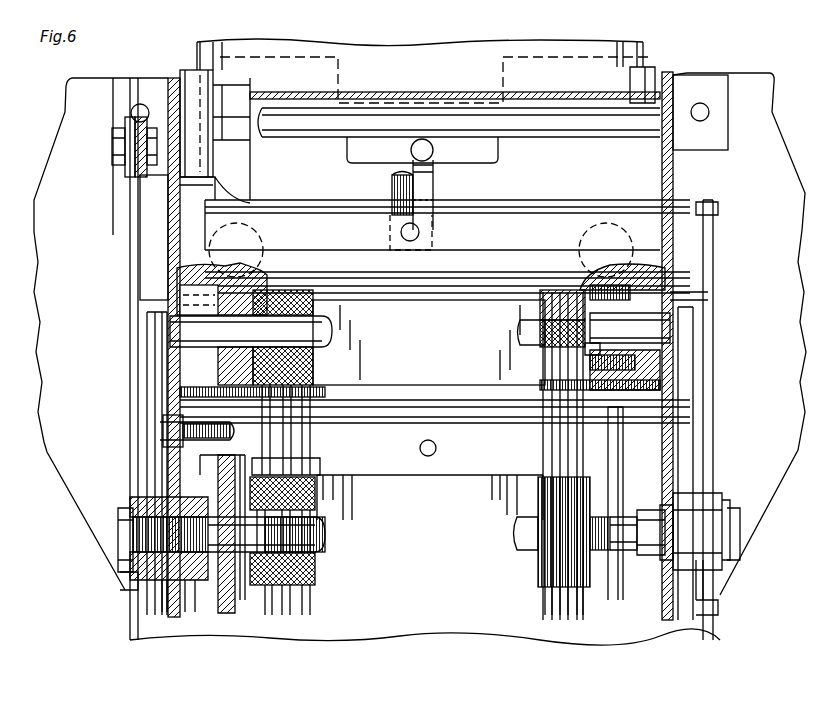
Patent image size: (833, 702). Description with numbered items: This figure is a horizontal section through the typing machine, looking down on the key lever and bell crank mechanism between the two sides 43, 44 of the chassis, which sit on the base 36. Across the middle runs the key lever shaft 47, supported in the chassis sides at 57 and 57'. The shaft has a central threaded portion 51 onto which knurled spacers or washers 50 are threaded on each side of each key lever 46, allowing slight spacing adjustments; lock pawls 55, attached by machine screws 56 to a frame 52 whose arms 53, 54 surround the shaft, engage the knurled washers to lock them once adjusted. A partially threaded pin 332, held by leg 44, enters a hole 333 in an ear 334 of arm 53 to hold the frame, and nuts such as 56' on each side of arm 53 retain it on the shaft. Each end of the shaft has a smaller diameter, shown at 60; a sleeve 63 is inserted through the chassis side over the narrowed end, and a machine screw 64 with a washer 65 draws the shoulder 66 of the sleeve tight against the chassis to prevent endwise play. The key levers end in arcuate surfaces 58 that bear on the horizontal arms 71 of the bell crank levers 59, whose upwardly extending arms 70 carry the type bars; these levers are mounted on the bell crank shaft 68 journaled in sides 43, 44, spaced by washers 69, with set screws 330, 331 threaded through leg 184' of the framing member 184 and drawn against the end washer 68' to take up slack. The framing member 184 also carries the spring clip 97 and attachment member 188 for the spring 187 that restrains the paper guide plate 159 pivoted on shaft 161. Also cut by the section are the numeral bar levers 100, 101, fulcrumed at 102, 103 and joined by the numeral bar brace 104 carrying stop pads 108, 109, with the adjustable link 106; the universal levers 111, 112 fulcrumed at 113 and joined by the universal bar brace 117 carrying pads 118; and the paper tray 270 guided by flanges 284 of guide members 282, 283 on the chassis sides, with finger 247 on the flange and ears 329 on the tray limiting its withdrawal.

The base 36 is at (770, 78).
The side of the chassis 43 is at (680, 82).
The side of the chassis 44 is at (168, 78).
The key levers 46 is at (287, 626).
The key lever shaft 47 is at (652, 512).
The spacers or washers 50 is at (318, 570).
The threaded portion 51 is at (322, 540).
The frame 52 is at (442, 477).
The arm 53 is at (222, 458).
The arm 54 is at (610, 428).
The lock pawls 55 is at (222, 485).
The machine screws 56 is at (439, 439).
The nut 56' is at (258, 634).
The shaft support 57 is at (192, 596).
The shaft support 57' is at (743, 578).
The arcuate surfaces 58 is at (296, 462).
The bell crank levers 59 is at (320, 380).
The narrowed end of the shaft 60 is at (192, 555).
The sleeve 63 is at (222, 512).
The machine screw 64 is at (118, 538).
The washer 65 is at (128, 555).
The shoulder 66 is at (138, 572).
The bell crank shaft 68 is at (460, 330).
The end washer 68' is at (552, 352).
The washers 69 is at (312, 355).
The upwardly extending arm 70 is at (540, 333).
The horizontal arm 71 is at (312, 433).
The spring clip 97 is at (436, 184).
The numeral bar lever 100 is at (138, 270).
The numeral bar lever 101 is at (712, 210).
The fulcrum 102 is at (125, 585).
The fulcrum 103 is at (722, 535).
The numeral bar brace 104 is at (140, 235).
The link 106 is at (130, 168).
The adjustable stop pad 108 is at (262, 237).
The adjustable stop pad 109 is at (580, 240).
The universal lever 111 is at (150, 378).
The universal lever 112 is at (693, 410).
The fulcrum 113 is at (132, 600).
The universal bar brace 117 is at (429, 342).
The adjustable pads 118 is at (172, 366).
The paper guide plate 159 is at (458, 92).
The shaft 161 is at (358, 115).
The framing member 184 is at (469, 245).
The leg 184' is at (678, 370).
The spring 187 is at (392, 185).
The attachment member 188 is at (392, 222).
The finger 247 is at (222, 140).
The paper tray 270 is at (418, 45).
The guide member 282 is at (192, 58).
The guide member 283 is at (652, 66).
The flange 284 is at (215, 85).
The ear 329 is at (225, 197).
The set screw 330 is at (690, 300).
The set screw 331 is at (690, 357).
The partially threaded pin 332 is at (170, 435).
The hole 333 is at (163, 418).
The ear 334 is at (165, 405).